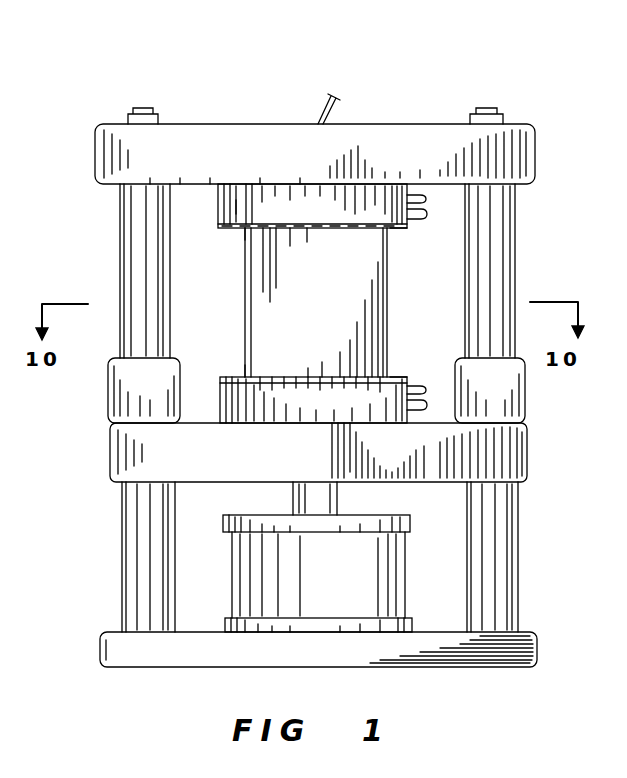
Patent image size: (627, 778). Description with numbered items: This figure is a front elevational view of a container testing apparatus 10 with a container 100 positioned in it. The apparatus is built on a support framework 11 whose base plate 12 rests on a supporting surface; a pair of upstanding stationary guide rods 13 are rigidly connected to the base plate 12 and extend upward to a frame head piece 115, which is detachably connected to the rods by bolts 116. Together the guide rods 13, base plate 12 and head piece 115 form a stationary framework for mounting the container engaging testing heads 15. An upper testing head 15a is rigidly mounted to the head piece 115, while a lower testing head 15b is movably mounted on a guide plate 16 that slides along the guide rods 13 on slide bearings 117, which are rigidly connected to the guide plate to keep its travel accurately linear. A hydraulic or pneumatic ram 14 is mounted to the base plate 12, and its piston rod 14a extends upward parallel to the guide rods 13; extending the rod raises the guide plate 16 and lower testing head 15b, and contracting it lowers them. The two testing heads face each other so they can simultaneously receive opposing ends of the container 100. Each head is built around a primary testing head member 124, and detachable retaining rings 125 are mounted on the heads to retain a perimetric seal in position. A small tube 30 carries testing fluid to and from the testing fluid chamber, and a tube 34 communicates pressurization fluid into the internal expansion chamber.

The container testing apparatus 10 is at (402, 100).
The support framework 11 is at (520, 254).
The base plate 12 is at (520, 642).
The guide rods 13 is at (158, 250).
The ram 14 is at (412, 542).
The piston rod 14a is at (338, 496).
The container engaging testing heads 15 is at (396, 184).
The upper testing head 15a is at (400, 234).
The lower testing head 15b is at (392, 388).
The guide plate 16 is at (502, 452).
The tube 30 is at (427, 291).
The tube 34 is at (412, 218).
The container 100 is at (355, 294).
The frame head piece 115 is at (315, 154).
The bolts 116 is at (143, 112).
The slide bearings 117 is at (165, 380).
The testing head member 124 is at (243, 206).
The retaining rings 125 is at (238, 234).